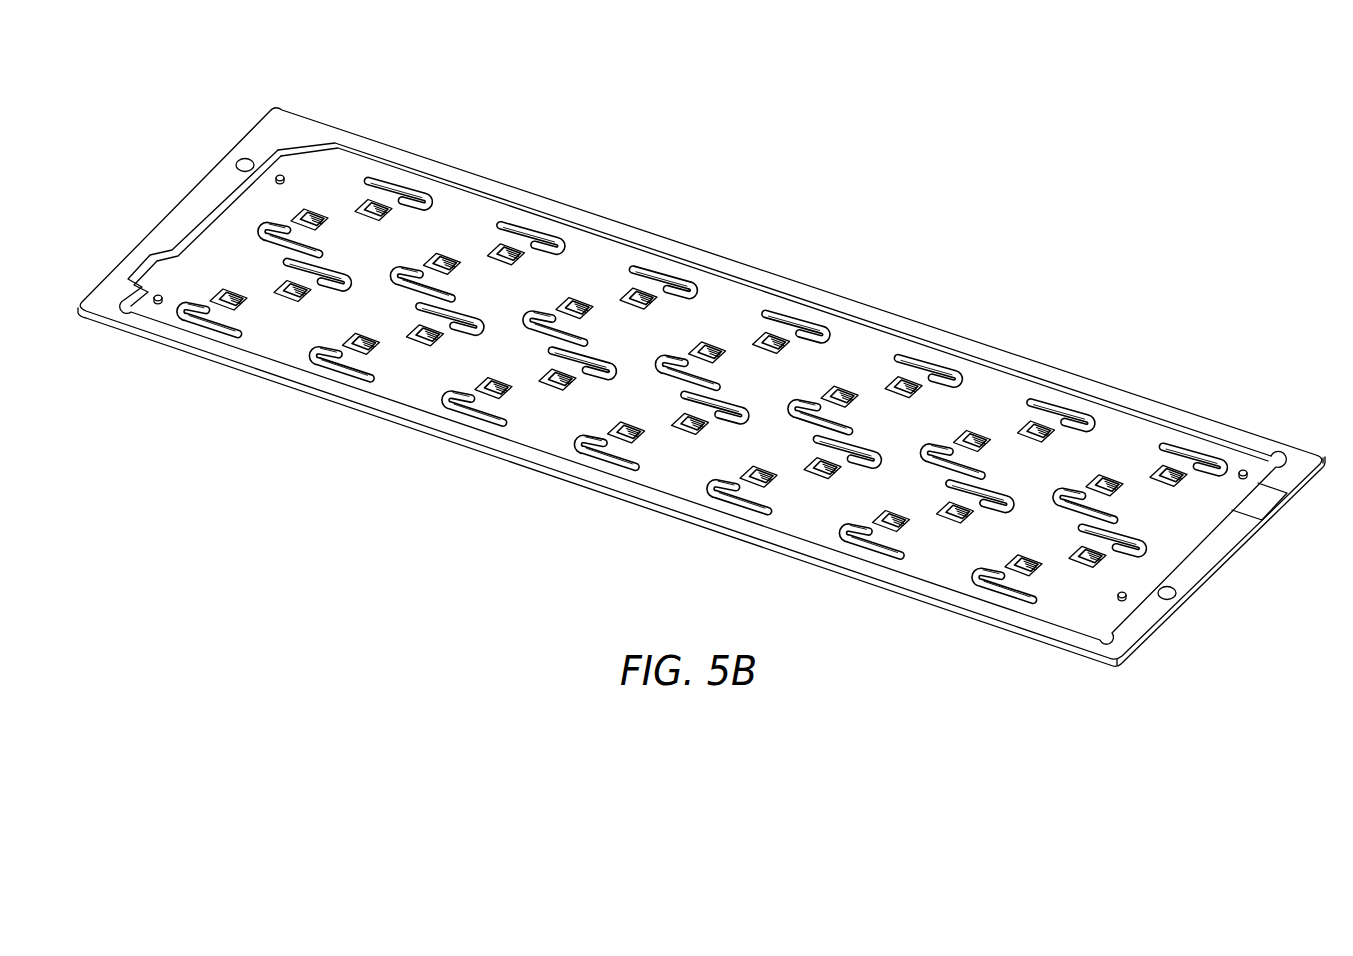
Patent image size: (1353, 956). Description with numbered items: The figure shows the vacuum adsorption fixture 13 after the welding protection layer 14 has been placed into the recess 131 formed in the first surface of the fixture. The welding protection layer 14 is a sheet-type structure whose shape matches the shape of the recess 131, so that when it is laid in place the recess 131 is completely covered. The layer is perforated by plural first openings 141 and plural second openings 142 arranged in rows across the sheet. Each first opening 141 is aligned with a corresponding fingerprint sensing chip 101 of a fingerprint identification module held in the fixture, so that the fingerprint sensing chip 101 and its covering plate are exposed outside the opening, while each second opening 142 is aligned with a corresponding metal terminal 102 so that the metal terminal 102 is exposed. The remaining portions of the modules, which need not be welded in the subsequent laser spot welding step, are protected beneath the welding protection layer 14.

The vacuum adsorption fixture 13 is at (282, 122).
The recess 131 is at (367, 155).
The welding protection layer 14 is at (703, 368).
The first opening 141 is at (725, 262).
The second opening 142 is at (718, 244).
The fingerprint sensing chip 101 is at (708, 248).
The metal terminal 102 is at (621, 242).